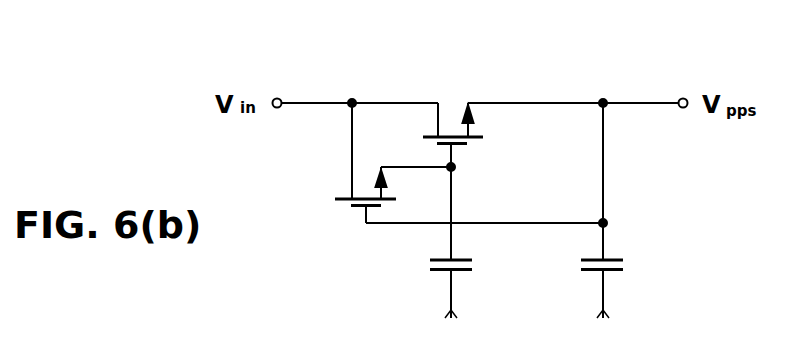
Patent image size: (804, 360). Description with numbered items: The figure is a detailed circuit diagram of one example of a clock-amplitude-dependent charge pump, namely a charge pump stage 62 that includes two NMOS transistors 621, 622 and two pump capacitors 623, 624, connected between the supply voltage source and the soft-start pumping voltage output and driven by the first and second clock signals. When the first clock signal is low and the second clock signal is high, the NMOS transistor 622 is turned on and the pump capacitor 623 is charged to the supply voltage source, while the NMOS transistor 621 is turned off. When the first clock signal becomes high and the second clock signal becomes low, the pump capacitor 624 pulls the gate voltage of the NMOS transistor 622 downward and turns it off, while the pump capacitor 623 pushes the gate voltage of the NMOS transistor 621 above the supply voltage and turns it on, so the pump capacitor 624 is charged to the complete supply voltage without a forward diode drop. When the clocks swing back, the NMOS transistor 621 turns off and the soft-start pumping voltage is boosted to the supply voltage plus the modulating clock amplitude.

The charge pump stage 62 is at (648, 68).
The NMOS transistor 621 is at (477, 145).
The NMOS transistor 622 is at (343, 207).
The pump capacitor 623 is at (422, 264).
The pump capacitor 624 is at (627, 266).